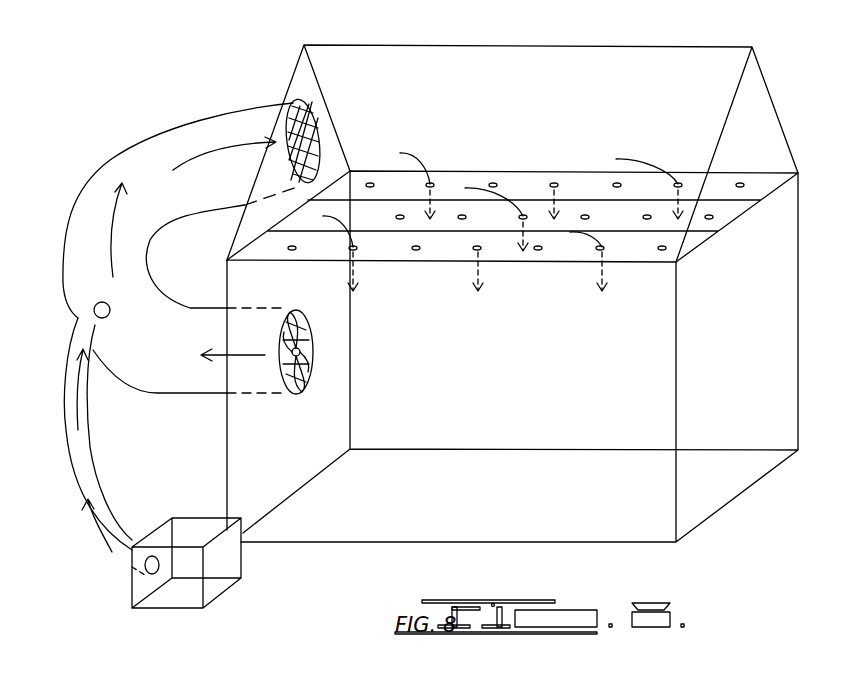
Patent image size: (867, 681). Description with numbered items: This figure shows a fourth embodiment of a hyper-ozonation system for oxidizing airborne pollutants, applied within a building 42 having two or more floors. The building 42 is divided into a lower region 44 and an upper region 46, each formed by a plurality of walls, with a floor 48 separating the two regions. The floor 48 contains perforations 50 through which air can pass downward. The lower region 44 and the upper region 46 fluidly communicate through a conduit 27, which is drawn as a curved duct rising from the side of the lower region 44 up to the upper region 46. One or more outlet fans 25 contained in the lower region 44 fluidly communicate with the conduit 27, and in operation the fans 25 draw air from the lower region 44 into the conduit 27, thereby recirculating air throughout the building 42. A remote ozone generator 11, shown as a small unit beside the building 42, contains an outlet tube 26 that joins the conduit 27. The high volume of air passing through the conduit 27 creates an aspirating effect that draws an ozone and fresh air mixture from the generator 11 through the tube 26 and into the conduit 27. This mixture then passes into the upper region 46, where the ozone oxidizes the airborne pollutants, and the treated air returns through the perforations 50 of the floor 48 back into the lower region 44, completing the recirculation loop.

The remote ozone generator 11 is at (182, 595).
The outlet fan 25 is at (312, 363).
The outlet tube 26 is at (87, 497).
The conduit 27 is at (162, 147).
The building 42 is at (440, 345).
The lower region 44 is at (558, 395).
The upper region 46 is at (667, 103).
The floor 48 is at (707, 205).
The perforations 50 is at (494, 184).